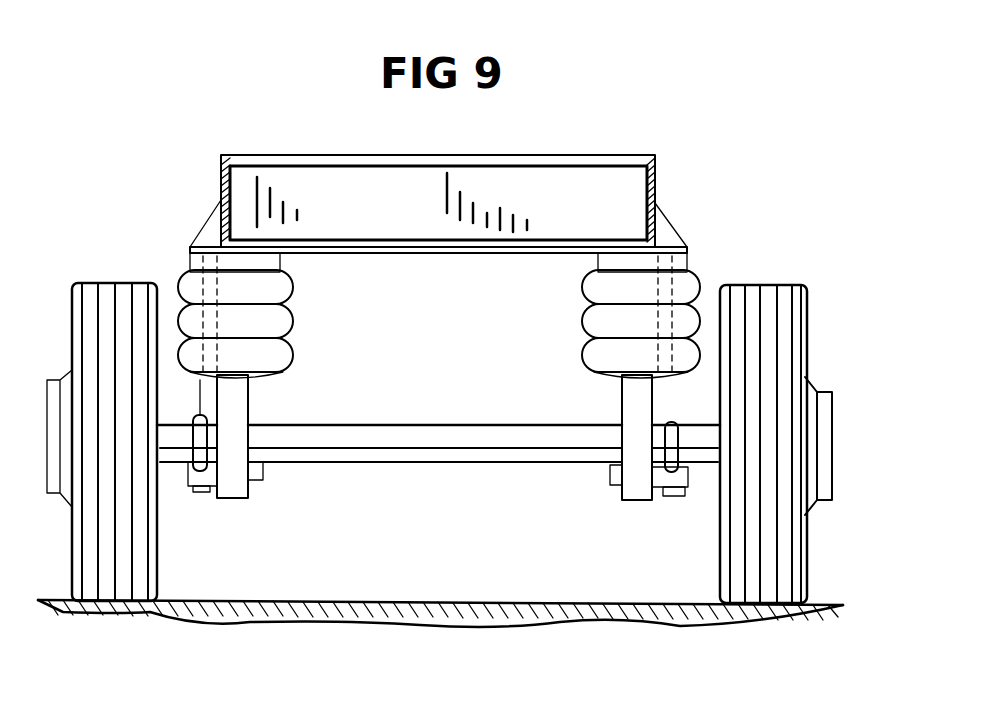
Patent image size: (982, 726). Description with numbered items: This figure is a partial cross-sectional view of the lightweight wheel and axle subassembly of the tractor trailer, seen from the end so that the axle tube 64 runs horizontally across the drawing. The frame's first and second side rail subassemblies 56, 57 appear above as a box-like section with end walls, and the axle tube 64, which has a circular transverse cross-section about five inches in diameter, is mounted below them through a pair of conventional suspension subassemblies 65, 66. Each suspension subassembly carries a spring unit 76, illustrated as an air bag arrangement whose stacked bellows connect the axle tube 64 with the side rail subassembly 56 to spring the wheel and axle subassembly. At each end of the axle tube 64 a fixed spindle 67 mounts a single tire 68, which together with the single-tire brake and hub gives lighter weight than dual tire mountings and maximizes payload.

The first side rail subassembly 56 is at (657, 188).
The second side rail subassembly 57 is at (221, 181).
The axle tube 64 is at (473, 453).
The suspension subassembly 65 is at (674, 418).
The suspension subassembly 66 is at (200, 411).
The fixed spindle 67 is at (825, 398).
The tire 68 is at (779, 297).
The spring unit 76 is at (190, 290).